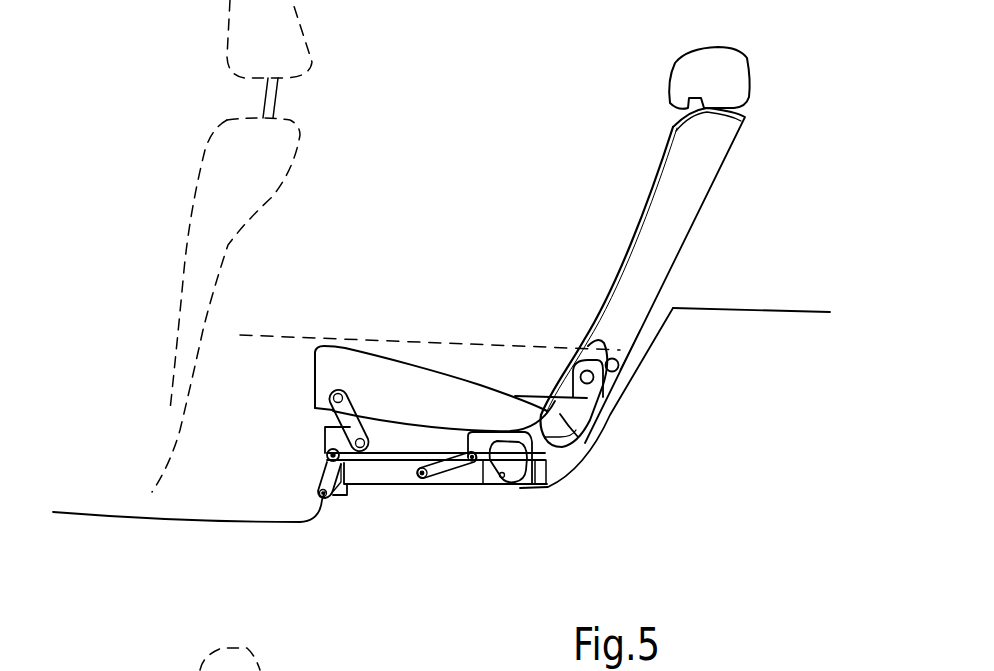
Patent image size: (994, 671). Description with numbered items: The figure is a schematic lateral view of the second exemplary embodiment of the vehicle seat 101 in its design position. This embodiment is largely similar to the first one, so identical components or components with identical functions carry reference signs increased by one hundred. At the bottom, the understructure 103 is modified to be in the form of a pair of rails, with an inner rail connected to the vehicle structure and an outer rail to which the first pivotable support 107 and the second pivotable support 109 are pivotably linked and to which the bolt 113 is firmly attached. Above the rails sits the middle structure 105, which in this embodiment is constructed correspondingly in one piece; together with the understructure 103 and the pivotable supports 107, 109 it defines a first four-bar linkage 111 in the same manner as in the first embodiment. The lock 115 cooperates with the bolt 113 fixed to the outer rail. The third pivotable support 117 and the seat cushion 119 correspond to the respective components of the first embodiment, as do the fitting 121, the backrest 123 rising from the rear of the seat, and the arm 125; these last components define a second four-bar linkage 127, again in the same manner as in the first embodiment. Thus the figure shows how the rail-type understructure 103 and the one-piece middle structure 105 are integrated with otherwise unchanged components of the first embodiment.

The vehicle seat 101 is at (516, 226).
The understructure 103 is at (376, 485).
The middle structure 105 is at (327, 438).
The first pivotable support 107 is at (322, 475).
The second pivotable support 109 is at (433, 470).
The first four-bar linkage 111 is at (326, 456).
The bolt 113 is at (501, 485).
The lock 115 is at (511, 458).
The third pivotable support 117 is at (330, 417).
The seat cushion 119 is at (375, 387).
The fitting 121 is at (580, 430).
The backrest 123 is at (680, 172).
The arm 125 is at (612, 386).
The second four-bar linkage 127 is at (614, 398).